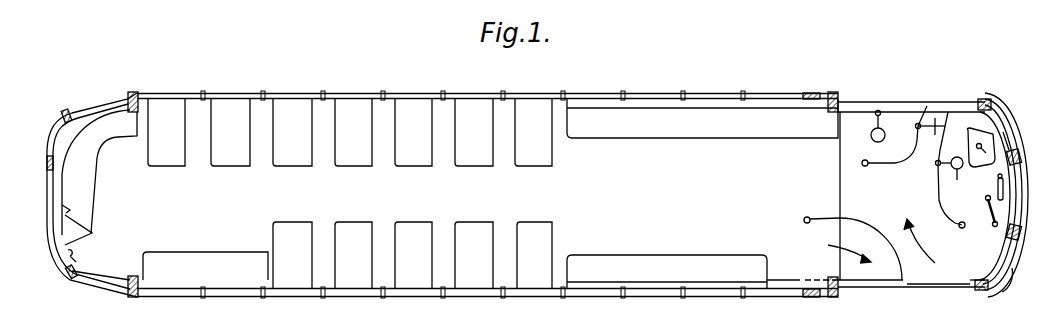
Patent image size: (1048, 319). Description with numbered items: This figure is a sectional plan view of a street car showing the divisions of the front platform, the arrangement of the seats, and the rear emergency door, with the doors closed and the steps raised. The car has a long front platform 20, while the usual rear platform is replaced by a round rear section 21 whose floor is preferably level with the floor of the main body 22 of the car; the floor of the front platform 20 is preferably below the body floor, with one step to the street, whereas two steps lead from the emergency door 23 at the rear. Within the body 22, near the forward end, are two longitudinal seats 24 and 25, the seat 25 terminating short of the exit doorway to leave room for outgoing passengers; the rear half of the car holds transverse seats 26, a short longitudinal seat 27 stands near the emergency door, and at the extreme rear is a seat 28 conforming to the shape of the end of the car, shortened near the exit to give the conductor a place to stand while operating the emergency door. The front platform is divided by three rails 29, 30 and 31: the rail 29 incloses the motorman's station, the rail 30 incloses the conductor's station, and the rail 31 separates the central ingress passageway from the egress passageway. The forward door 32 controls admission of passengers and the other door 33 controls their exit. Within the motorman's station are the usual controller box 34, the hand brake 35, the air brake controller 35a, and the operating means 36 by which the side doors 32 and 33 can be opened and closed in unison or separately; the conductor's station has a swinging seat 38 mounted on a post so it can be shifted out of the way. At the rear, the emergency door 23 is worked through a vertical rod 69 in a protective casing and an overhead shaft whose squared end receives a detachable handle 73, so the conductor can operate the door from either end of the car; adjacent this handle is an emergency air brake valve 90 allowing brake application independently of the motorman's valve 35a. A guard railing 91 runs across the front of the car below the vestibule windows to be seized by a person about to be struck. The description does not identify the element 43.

The front platform 20 is at (887, 199).
The round rear section 21 is at (133, 213).
The main body 22 is at (524, 195).
The emergency door 23 is at (101, 269).
The longitudinal seat 24 is at (697, 130).
The longitudinal seat 25 is at (668, 262).
The transverse seats 26 is at (283, 158).
The short longitudinal seat 27 is at (231, 262).
The rear end seat 28 is at (78, 160).
The rail 29 is at (886, 228).
The rail 30 is at (938, 180).
The rail 31 is at (910, 150).
The forward door 32 is at (931, 251).
The door 33 is at (856, 264).
The controller box 34 is at (968, 124).
The hand brake 35 is at (986, 203).
The air brake controller 35a is at (1007, 142).
The operating means 36 is at (998, 184).
The swinging seat 38 is at (871, 137).
The body frame 43 is at (1021, 192).
The vertical rod 69 is at (50, 233).
The detachable handle 73 is at (78, 221).
The emergency air brake valve 90 is at (74, 256).
The guard railing 91 is at (1011, 272).